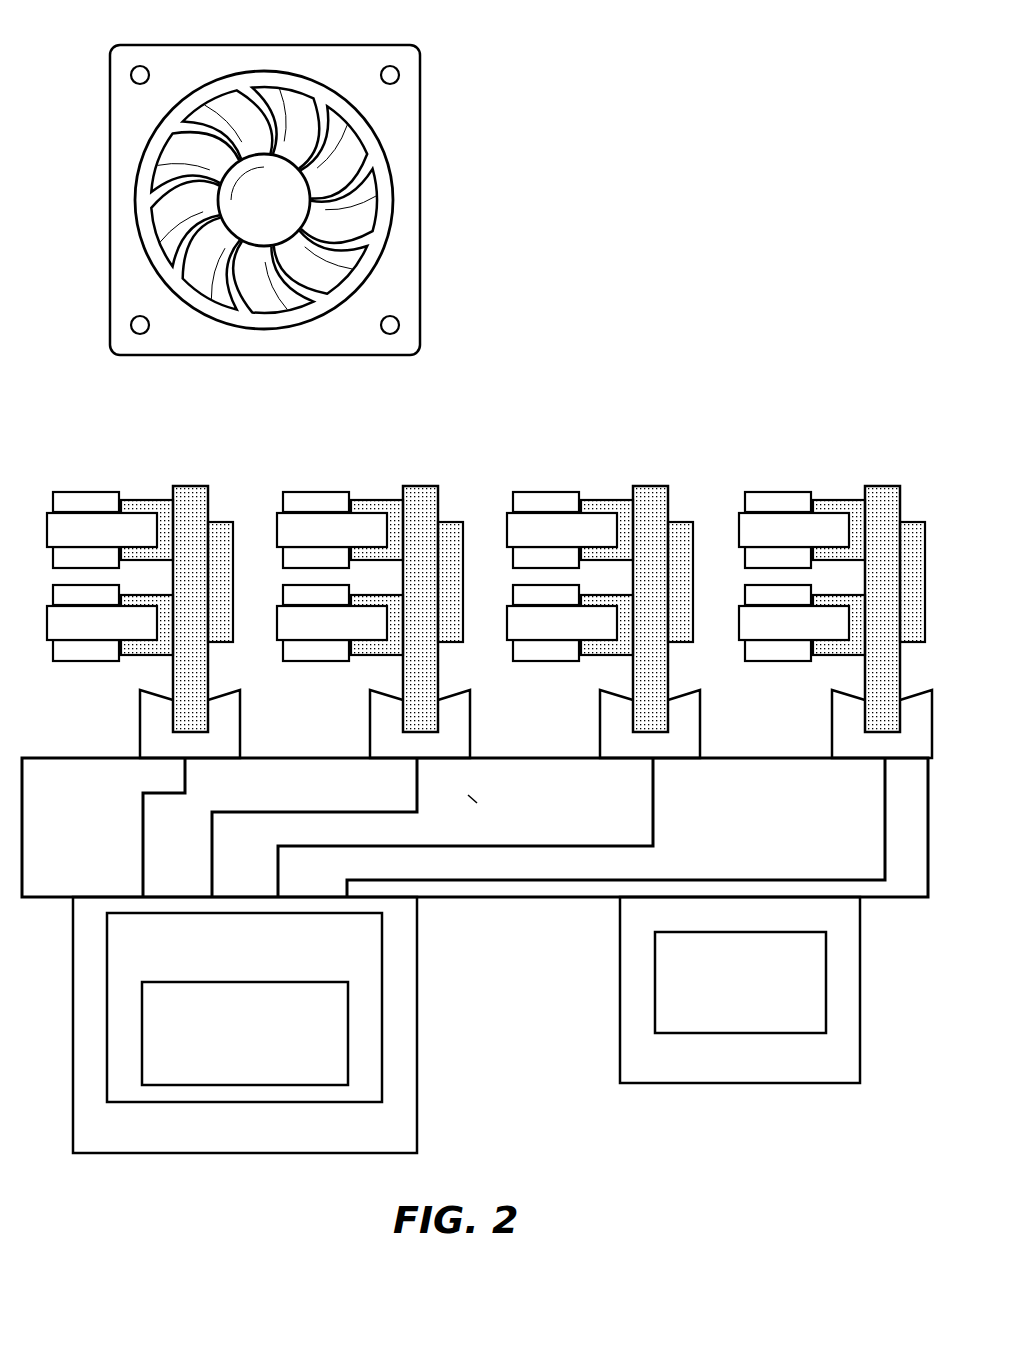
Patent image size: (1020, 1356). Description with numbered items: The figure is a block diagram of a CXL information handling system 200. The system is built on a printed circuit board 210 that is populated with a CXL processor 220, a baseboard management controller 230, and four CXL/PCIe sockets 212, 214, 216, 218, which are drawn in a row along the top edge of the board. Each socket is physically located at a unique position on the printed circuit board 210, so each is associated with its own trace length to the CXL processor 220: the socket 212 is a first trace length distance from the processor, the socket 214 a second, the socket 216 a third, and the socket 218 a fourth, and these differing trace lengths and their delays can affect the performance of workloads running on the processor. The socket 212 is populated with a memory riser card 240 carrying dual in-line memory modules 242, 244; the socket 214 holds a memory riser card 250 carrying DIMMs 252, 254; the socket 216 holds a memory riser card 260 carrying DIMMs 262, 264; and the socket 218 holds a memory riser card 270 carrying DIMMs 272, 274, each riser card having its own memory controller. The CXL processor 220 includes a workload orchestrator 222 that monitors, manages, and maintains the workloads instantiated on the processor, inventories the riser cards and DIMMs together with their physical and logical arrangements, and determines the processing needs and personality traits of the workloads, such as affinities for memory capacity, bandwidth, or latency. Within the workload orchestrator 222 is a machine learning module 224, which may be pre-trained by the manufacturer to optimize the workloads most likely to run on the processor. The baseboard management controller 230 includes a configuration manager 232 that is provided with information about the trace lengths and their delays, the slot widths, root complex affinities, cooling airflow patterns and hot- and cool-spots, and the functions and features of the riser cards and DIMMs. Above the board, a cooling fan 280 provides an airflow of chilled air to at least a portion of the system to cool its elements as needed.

The information handling system 200 is at (58, 1213).
The printed circuit board 210 is at (34, 884).
The CXL/PCIe socket 212 is at (140, 722).
The CXL/PCIe socket 214 is at (392, 724).
The CXL/PCIe socket 216 is at (622, 724).
The CXL/PCIe socket 218 is at (854, 724).
The CXL processor 220 is at (73, 1045).
The workload orchestrator 222 is at (229, 971).
The machine learning module 224 is at (229, 1071).
The baseboard management controller 230 is at (620, 1045).
The configuration manager 232 is at (724, 1017).
The memory riser card 240 is at (199, 463).
The dual in-line memory module 242 is at (52, 506).
The dual in-line memory module 244 is at (52, 650).
The memory riser card 250 is at (357, 587).
The dual in-line memory module 252 is at (316, 521).
The dual in-line memory module 254 is at (316, 633).
The memory riser card 260 is at (587, 587).
The dual in-line memory module 262 is at (546, 521).
The dual in-line memory module 264 is at (546, 633).
The memory riser card 270 is at (819, 587).
The dual in-line memory module 272 is at (778, 521).
The dual in-line memory module 274 is at (778, 633).
The cooling fan 280 is at (126, 45).